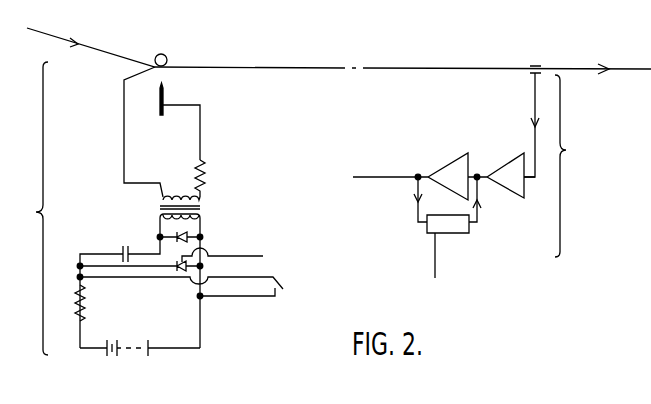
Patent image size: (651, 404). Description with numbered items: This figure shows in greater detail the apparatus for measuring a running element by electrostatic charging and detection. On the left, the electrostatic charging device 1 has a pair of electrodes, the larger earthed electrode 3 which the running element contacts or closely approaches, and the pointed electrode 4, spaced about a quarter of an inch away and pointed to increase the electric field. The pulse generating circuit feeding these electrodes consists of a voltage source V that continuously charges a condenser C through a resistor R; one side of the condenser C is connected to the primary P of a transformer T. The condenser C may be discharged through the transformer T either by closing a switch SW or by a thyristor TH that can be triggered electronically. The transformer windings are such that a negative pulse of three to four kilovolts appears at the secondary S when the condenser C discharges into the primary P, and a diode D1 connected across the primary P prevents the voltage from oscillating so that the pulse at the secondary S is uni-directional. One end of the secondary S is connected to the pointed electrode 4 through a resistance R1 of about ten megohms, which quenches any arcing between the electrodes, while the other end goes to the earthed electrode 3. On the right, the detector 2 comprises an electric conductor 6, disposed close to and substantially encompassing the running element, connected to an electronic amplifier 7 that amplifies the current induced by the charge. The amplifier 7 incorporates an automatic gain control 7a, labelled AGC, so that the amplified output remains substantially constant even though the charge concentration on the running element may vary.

The electrostatic charging device 1 is at (30, 208).
The detector 2 is at (569, 166).
The earthed electrode 3 is at (167, 56).
The pointed electrode 4 is at (165, 99).
The electric conductor 6 is at (543, 66).
The electronic amplifier 7 is at (450, 158).
The automatic gain control 7a is at (447, 240).
The resistance R1 is at (206, 180).
The secondary S is at (166, 197).
The primary P is at (158, 221).
The transformer T is at (149, 202).
The diode D1 is at (186, 236).
The condenser C is at (120, 288).
The thyristor TH is at (178, 263).
The switch SW is at (286, 288).
The resistor R is at (76, 307).
The voltage source V is at (140, 340).
The automatic gain control AGC is at (458, 228).